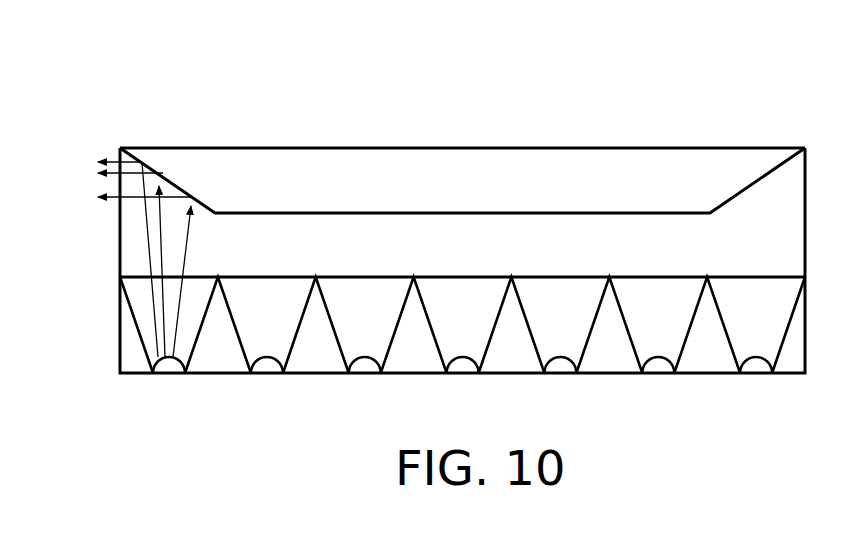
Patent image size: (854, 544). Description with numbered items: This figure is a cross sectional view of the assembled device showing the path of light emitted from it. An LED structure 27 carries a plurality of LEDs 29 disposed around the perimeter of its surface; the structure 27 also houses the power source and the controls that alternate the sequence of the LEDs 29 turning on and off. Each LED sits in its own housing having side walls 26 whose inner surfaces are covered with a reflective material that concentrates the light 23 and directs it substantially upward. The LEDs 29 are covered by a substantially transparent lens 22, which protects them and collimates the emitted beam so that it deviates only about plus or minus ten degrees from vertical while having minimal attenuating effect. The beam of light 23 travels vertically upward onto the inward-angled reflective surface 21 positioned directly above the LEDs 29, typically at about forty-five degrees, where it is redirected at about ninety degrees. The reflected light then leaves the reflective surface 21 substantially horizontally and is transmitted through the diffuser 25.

The reflective surface 21 is at (735, 196).
The transparent lens 22 is at (378, 276).
The beam of light 23 is at (98, 197).
The diffuser 25 is at (120, 243).
The side walls 26 is at (533, 335).
The LED structure 27 is at (119, 358).
The LEDs 29 is at (167, 365).